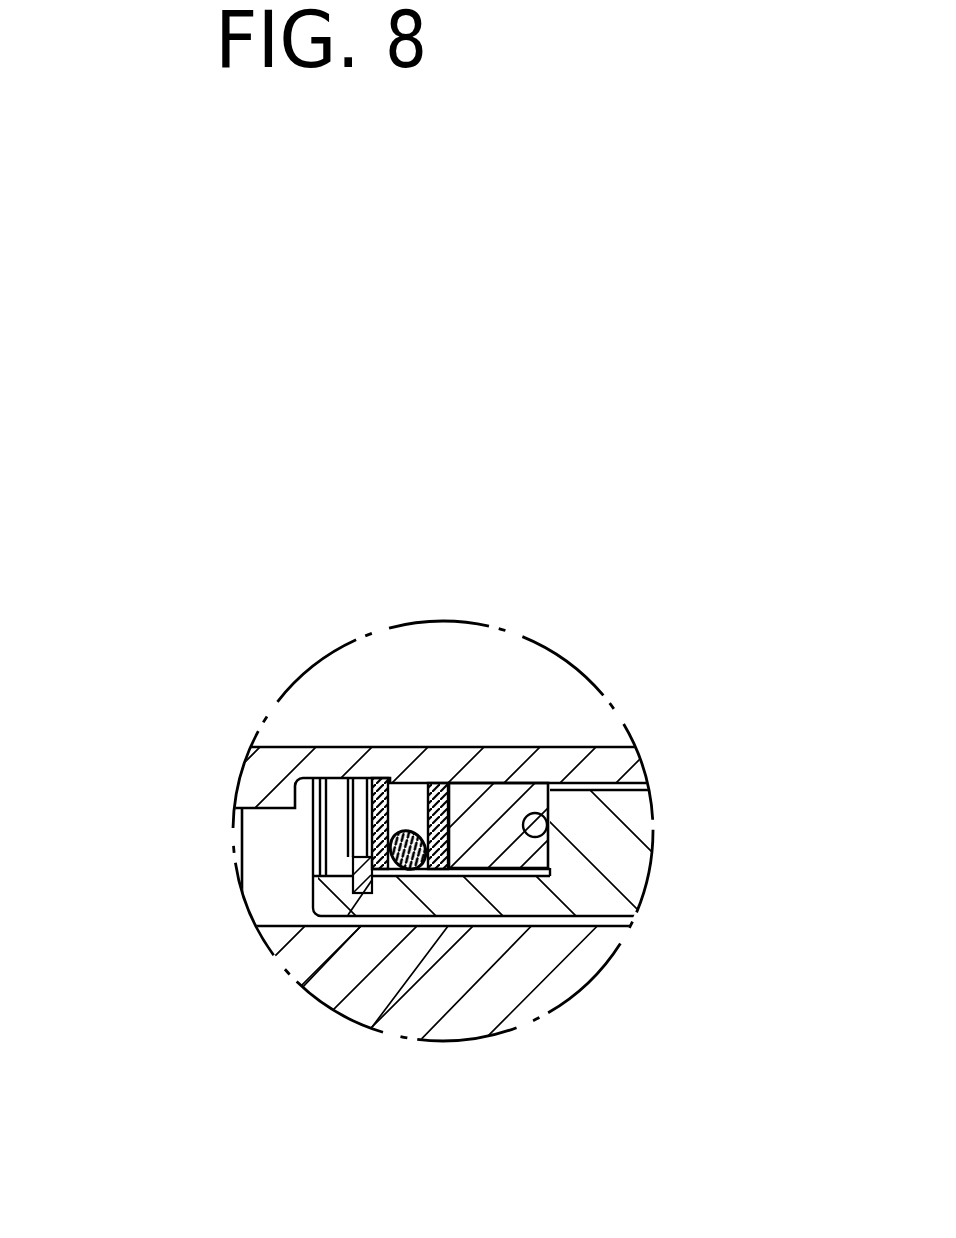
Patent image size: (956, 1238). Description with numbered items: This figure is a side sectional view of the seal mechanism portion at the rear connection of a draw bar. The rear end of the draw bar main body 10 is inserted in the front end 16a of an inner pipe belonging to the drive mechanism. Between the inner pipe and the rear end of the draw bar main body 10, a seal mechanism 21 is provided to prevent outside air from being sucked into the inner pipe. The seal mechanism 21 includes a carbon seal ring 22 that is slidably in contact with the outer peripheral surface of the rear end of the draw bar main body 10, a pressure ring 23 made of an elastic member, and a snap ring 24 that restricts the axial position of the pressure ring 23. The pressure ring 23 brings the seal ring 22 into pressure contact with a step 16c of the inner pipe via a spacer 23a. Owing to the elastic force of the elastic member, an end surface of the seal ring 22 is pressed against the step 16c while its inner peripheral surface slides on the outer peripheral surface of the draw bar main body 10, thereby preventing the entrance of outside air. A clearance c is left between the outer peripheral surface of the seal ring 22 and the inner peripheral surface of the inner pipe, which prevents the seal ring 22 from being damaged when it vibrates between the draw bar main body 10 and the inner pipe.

The draw bar main body 10 is at (628, 770).
The front end of inner pipe 16a is at (602, 897).
The step of inner pipe 16c is at (550, 812).
The seal mechanism 21 is at (292, 882).
The carbon seal ring 22 is at (510, 792).
The pressure ring 23 is at (399, 922).
The spacer 23a is at (433, 790).
The snap ring 24 is at (323, 927).
The clearance c is at (473, 873).